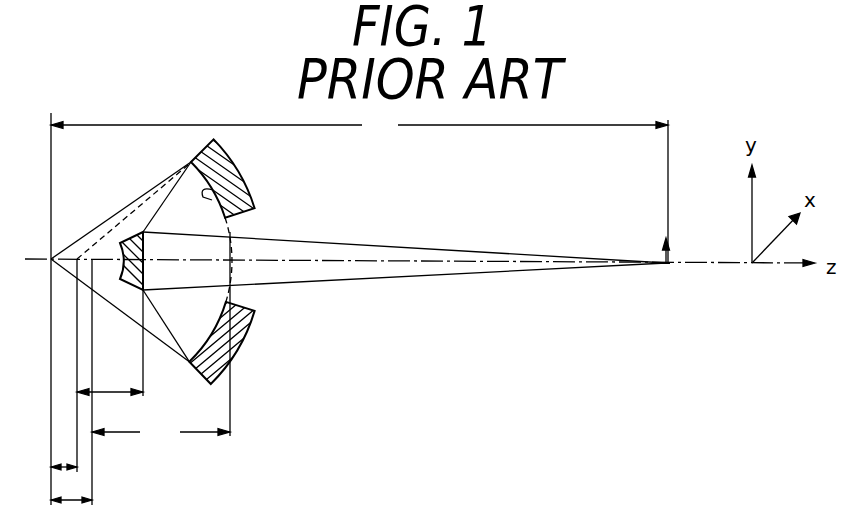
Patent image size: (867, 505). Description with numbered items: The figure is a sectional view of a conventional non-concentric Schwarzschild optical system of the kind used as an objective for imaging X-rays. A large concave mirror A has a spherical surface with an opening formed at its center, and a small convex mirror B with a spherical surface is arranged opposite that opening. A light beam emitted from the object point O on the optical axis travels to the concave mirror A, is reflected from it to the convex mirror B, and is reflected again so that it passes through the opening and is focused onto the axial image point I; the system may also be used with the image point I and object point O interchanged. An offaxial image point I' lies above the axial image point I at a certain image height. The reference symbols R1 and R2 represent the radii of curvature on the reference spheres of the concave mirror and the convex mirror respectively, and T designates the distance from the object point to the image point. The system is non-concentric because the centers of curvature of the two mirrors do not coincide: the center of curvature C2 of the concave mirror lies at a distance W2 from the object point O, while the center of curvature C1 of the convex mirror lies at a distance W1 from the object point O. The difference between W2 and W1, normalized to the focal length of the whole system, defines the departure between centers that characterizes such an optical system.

The concave mirror A is at (244, 182).
The convex mirror B is at (146, 268).
The center of curvature of the convex mirror C1 is at (92, 259).
The center of curvature of the concave mirror C2 is at (77, 259).
The object point O is at (40, 309).
The distance from the object point to the image point T is at (359, 189).
The radius of curvature of the concave mirror R1 is at (161, 433).
The radius of curvature of the convex mirror R2 is at (110, 343).
The distance from the object point to the center of curvature C1 W1 is at (62, 500).
The distance from the object point to the center of curvature C2 W2 is at (60, 466).
The image point I is at (662, 293).
The offaxial image point I' is at (650, 225).